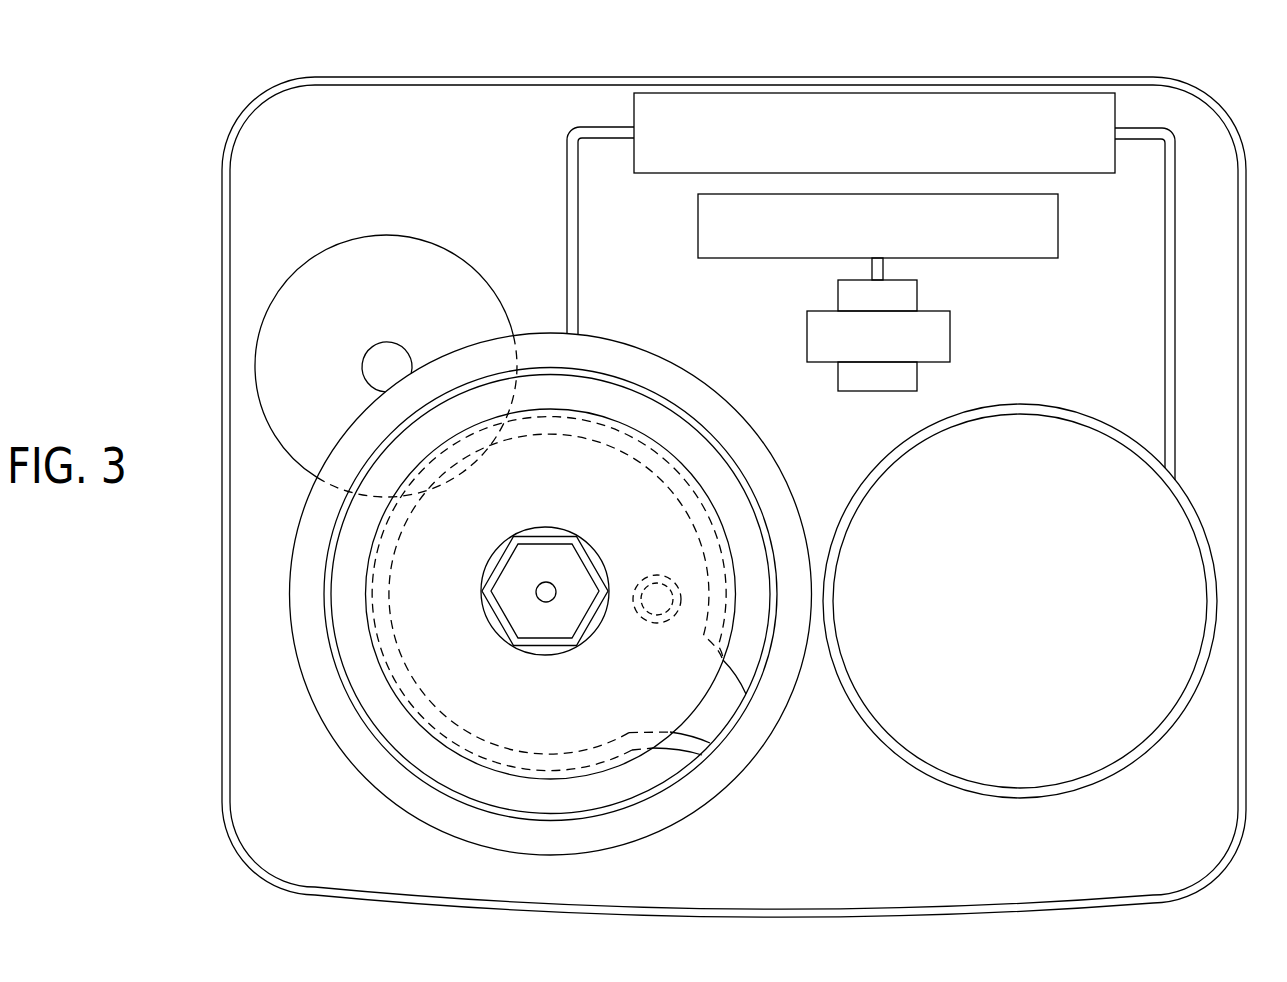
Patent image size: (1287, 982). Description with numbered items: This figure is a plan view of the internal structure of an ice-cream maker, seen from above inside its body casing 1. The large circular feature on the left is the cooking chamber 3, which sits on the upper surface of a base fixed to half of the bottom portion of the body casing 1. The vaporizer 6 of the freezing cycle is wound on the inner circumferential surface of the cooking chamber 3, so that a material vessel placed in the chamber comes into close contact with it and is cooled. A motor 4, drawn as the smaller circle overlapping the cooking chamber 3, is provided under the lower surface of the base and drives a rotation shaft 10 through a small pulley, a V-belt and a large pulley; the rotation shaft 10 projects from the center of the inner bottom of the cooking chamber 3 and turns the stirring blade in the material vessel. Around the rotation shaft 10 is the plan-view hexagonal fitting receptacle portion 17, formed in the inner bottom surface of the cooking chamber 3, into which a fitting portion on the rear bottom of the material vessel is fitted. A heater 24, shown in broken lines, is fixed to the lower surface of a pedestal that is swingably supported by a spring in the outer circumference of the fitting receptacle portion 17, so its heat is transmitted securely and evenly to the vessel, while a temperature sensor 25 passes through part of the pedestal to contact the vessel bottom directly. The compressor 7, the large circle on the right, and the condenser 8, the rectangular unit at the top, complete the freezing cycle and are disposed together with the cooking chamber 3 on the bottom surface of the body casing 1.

The body casing 1 is at (252, 118).
The cooking chamber 3 is at (338, 682).
The motor 4 is at (278, 352).
The vaporizer 6 is at (290, 562).
The compressor 7 is at (1152, 572).
The condenser 8 is at (865, 118).
The rotation shaft 10 is at (547, 602).
The fitting receptacle portion 17 is at (568, 653).
The heater 24 is at (462, 742).
The temperature sensor 25 is at (664, 622).